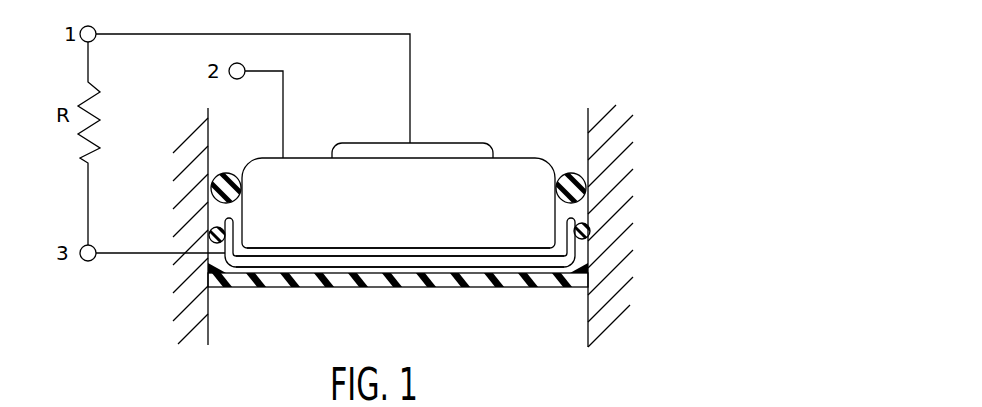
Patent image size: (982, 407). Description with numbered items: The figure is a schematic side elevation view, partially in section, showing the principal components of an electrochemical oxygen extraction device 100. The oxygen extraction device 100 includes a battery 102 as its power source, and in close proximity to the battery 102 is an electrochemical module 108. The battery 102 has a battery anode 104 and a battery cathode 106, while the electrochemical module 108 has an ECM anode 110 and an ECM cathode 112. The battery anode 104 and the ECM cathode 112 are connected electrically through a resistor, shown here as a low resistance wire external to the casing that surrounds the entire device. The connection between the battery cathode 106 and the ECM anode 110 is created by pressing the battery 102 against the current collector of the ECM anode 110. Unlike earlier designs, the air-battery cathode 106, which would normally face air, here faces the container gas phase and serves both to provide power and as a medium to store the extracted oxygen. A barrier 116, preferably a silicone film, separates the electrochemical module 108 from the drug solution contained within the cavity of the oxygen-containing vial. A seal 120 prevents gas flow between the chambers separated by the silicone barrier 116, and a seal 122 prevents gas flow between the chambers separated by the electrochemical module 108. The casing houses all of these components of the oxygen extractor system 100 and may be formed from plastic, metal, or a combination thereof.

The oxygen extraction device 100 is at (502, 62).
The battery 102 is at (518, 157).
The battery anode 104 is at (438, 142).
The battery cathode 106 is at (395, 250).
The electrochemical module 108 is at (577, 252).
The ECM anode 110 is at (435, 257).
The ECM cathode 112 is at (500, 267).
The barrier 116 is at (322, 283).
The seal 120 is at (590, 229).
The seal 122 is at (586, 183).